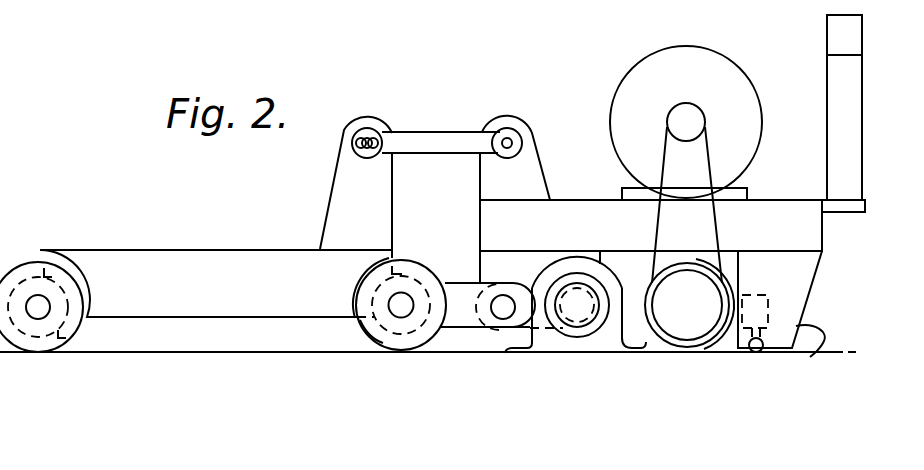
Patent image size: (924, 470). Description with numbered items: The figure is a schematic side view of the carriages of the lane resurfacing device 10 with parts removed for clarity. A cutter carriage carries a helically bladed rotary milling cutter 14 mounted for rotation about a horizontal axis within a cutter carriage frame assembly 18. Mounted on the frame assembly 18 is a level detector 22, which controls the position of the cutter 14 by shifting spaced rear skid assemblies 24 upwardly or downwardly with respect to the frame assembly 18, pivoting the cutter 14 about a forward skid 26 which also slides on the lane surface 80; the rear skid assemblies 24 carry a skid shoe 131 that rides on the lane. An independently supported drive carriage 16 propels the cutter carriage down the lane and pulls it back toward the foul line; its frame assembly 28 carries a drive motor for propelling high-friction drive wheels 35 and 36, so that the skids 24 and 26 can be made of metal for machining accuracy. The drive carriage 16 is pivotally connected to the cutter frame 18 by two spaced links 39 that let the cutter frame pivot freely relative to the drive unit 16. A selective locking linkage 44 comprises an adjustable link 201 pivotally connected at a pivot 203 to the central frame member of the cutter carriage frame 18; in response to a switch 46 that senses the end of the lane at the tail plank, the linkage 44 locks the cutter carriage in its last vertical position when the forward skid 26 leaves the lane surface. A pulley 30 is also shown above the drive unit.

The lane resurfacing device 10 is at (190, 412).
The rotary milling cutter 14 is at (689, 342).
The drive carriage 16 is at (170, 228).
The cutter carriage frame assembly 18 is at (575, 198).
The level detector 22 is at (821, 90).
The rear skid assemblies 24 is at (566, 360).
The forward skid 26 is at (800, 333).
The drive unit frame assembly 28 is at (215, 324).
The pulley 30 is at (664, 58).
The friction drive wheel 35 is at (48, 357).
The friction drive wheel 36 is at (398, 347).
The spaced links 39 is at (471, 323).
The selective locking linkage 44 is at (435, 162).
The switch 46 is at (743, 358).
The lane surface 80 is at (299, 343).
The skid shoe 131 is at (603, 354).
The adjustable link 201 is at (416, 140).
The pivotal connection 203 is at (509, 141).